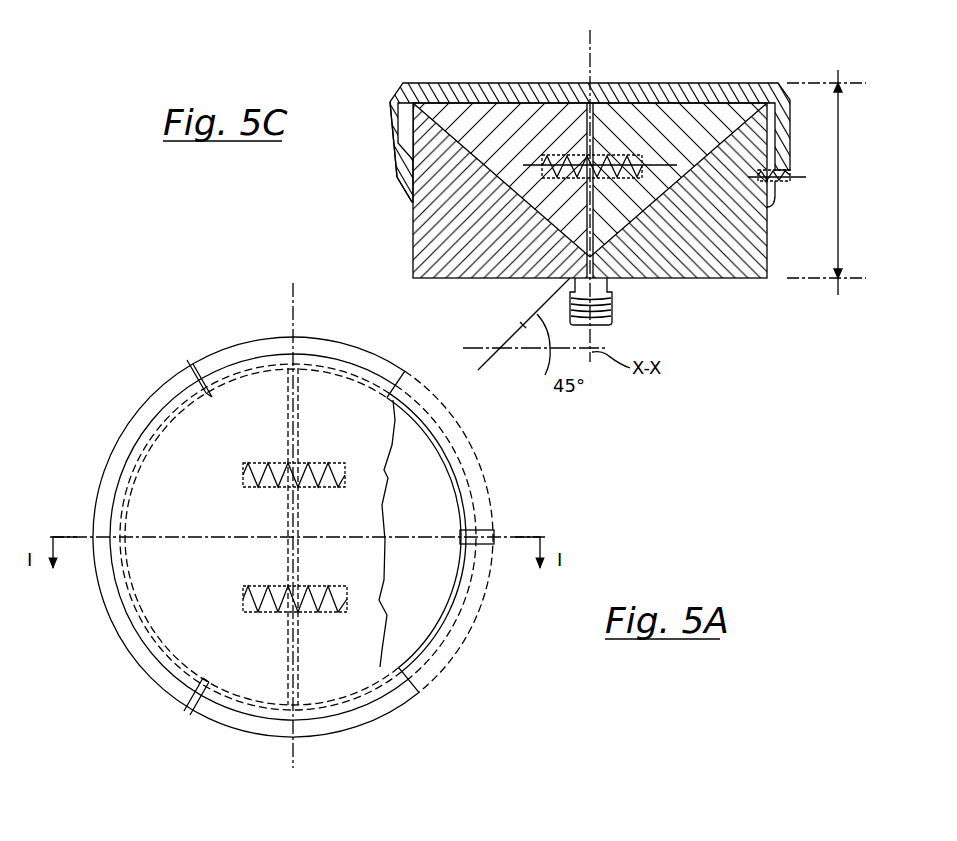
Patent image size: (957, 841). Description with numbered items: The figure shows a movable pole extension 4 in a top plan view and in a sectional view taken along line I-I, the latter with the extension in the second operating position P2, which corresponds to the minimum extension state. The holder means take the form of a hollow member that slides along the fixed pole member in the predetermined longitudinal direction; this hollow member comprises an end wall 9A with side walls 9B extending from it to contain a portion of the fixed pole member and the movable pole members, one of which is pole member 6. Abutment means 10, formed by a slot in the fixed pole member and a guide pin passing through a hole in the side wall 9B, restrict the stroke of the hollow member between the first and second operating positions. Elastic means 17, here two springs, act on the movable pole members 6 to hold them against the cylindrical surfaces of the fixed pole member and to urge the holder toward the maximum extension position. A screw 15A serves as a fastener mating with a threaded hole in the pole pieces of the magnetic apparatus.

In FIG. 5C, the movable pole extension 4 is at (413, 243).
In FIG. 5A, the movable pole extension 4 is at (482, 472).
In FIG. 5A, the pole member 6 is at (427, 605).
In FIG. 5C, the end wall 9A is at (718, 83).
In FIG. 5A, the end wall 9A is at (380, 477).
In FIG. 5C, the side wall 9B is at (391, 136).
In FIG. 5A, the abutment means 10 is at (182, 707).
In FIG. 5C, the screw 15A is at (612, 315).
In FIG. 5C, the elastic means 17 is at (618, 132).
In FIG. 5A, the elastic means 17 is at (313, 450).
In FIG. 5C, the second operating position P2 is at (827, 182).